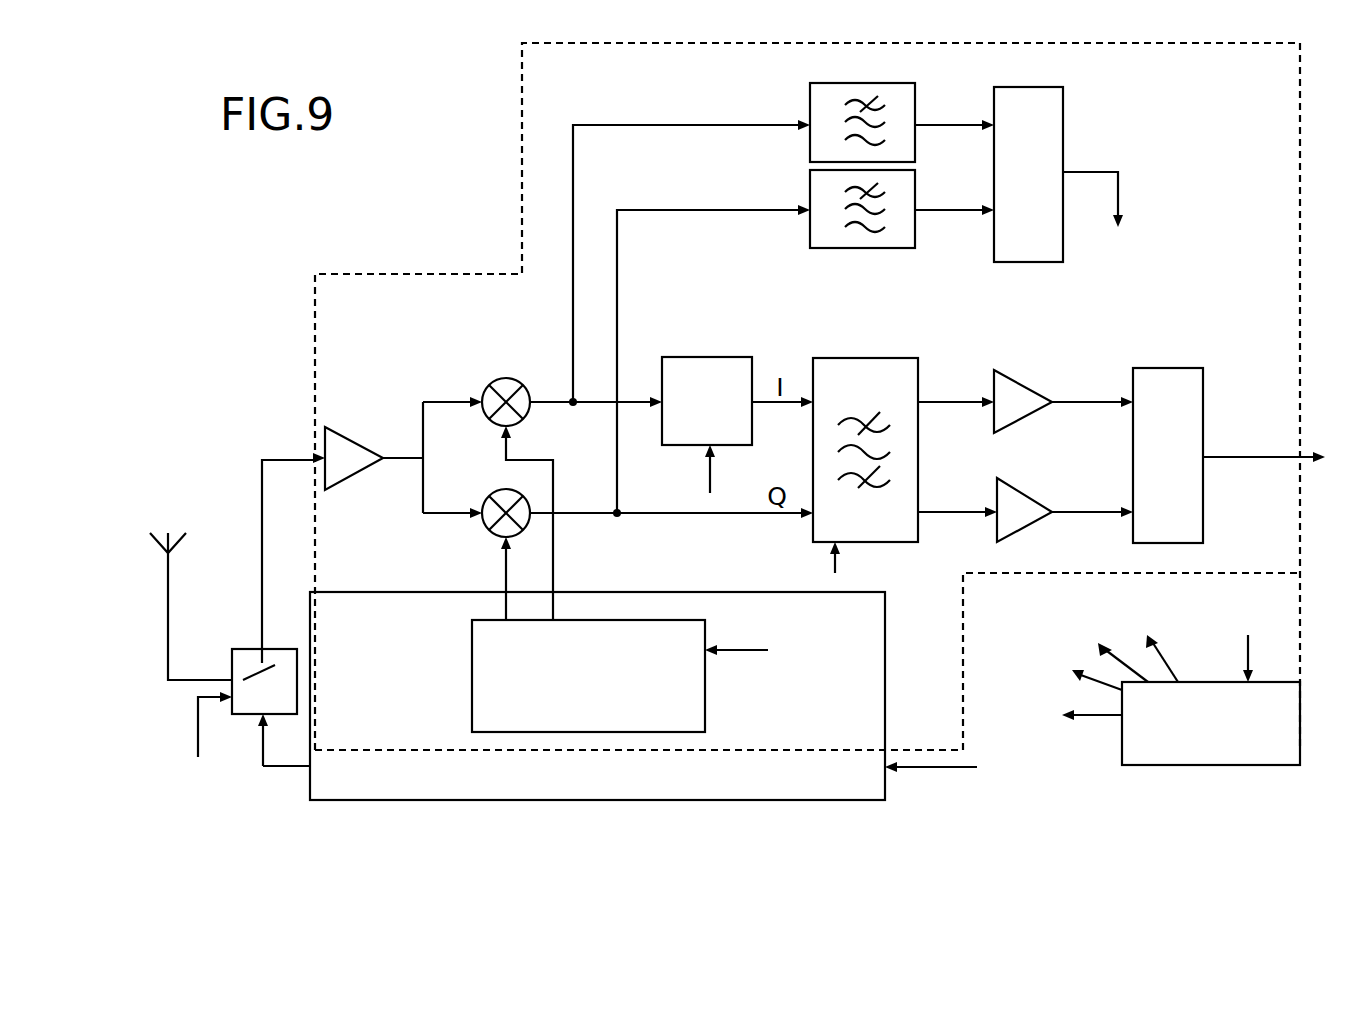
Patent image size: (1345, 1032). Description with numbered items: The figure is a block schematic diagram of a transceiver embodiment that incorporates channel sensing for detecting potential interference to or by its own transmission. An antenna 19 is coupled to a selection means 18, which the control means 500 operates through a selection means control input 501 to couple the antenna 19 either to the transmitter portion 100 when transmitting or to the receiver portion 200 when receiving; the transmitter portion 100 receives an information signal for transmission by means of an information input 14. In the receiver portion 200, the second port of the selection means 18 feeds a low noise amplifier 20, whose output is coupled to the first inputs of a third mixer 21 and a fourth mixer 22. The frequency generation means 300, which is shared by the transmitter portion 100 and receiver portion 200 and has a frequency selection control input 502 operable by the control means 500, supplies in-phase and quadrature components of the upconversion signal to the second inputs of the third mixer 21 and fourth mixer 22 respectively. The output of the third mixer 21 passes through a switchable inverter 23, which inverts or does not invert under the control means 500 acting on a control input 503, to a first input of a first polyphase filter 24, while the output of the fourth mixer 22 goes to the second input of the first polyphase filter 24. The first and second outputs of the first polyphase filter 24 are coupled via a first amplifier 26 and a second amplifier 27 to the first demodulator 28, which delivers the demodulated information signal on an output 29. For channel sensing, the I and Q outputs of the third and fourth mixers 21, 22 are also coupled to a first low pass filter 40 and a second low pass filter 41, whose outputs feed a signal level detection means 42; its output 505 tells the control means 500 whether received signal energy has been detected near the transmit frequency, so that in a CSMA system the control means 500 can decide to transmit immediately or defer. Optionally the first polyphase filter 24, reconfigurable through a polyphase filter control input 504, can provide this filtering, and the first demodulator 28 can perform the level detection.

The information input 14 is at (945, 770).
The selection means 18 is at (232, 655).
The antenna 19 is at (180, 542).
The low noise amplifier 20 is at (345, 435).
The third mixer 21 is at (497, 378).
The fourth mixer 22 is at (485, 528).
The switchable inverter 23 is at (700, 357).
The first polyphase filter 24 is at (858, 358).
The first amplifier 26 is at (1018, 378).
The second amplifier 27 is at (1022, 525).
The first demodulator 28 is at (1168, 455).
The output 29 is at (1215, 455).
The first low pass filter 40 is at (810, 95).
The second low pass filter 41 is at (810, 190).
The signal level detection means 42 is at (1028, 174).
The transmitter portion 100 is at (310, 790).
The receiver portion 200 is at (398, 273).
The frequency generation means 300 is at (705, 705).
The control means 500 is at (1211, 723).
The selection means control input 501 is at (198, 728).
The frequency selection control input 502 is at (740, 648).
The control input 503 is at (710, 465).
The polyphase filter control input 504 is at (840, 565).
The output 505 is at (1088, 170).